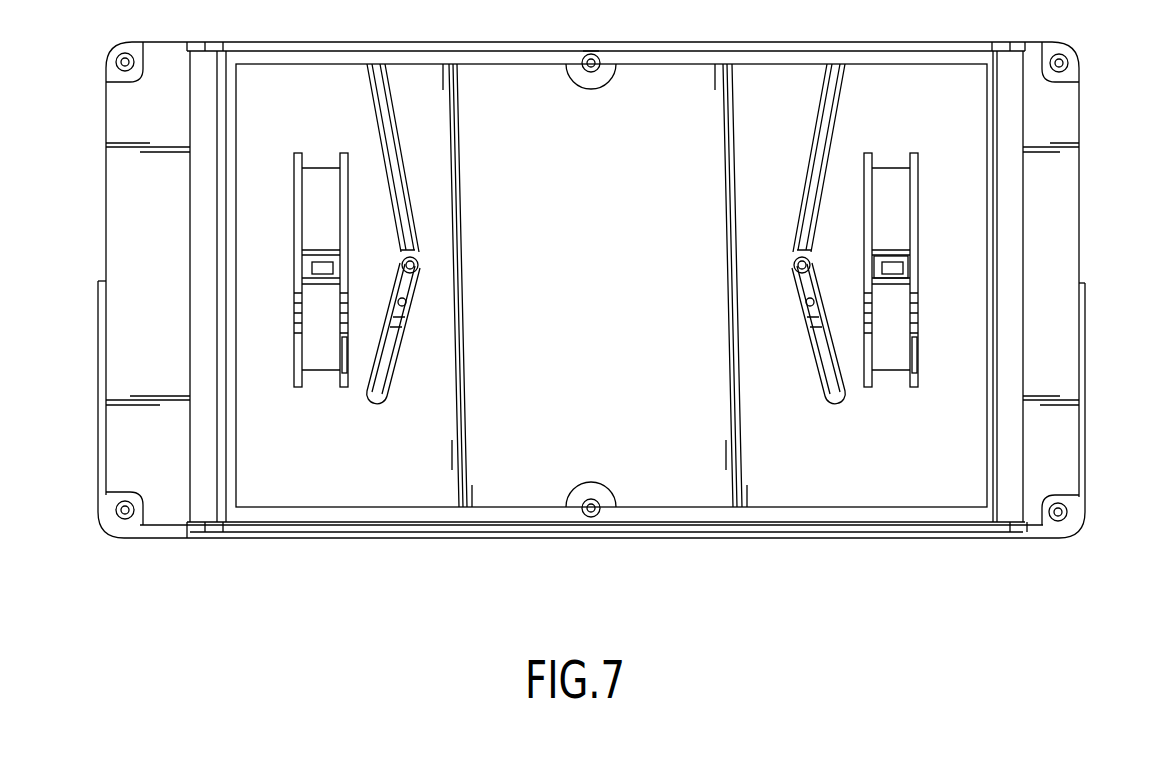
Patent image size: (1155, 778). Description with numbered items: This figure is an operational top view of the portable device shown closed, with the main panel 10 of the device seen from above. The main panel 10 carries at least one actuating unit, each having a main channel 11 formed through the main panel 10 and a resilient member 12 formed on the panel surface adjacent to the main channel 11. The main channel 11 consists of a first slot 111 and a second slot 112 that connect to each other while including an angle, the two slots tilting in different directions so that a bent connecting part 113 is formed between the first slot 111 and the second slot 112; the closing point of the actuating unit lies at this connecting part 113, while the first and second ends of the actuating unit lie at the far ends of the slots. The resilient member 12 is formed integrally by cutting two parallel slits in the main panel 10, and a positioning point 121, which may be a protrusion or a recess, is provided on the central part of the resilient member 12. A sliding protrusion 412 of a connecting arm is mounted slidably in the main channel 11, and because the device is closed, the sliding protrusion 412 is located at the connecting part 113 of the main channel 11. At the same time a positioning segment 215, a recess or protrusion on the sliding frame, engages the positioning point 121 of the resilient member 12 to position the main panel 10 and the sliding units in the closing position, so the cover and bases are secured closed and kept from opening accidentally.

The main panel 10 is at (460, 488).
The main channel 11 is at (776, 246).
The first slot 111 is at (822, 137).
The second slot 112 is at (830, 397).
The connecting part 113 is at (797, 262).
The sliding protrusion 412 is at (798, 270).
The resilient member 12 is at (1000, 367).
The positioning point 121 is at (910, 273).
The positioning segment 215 is at (893, 268).